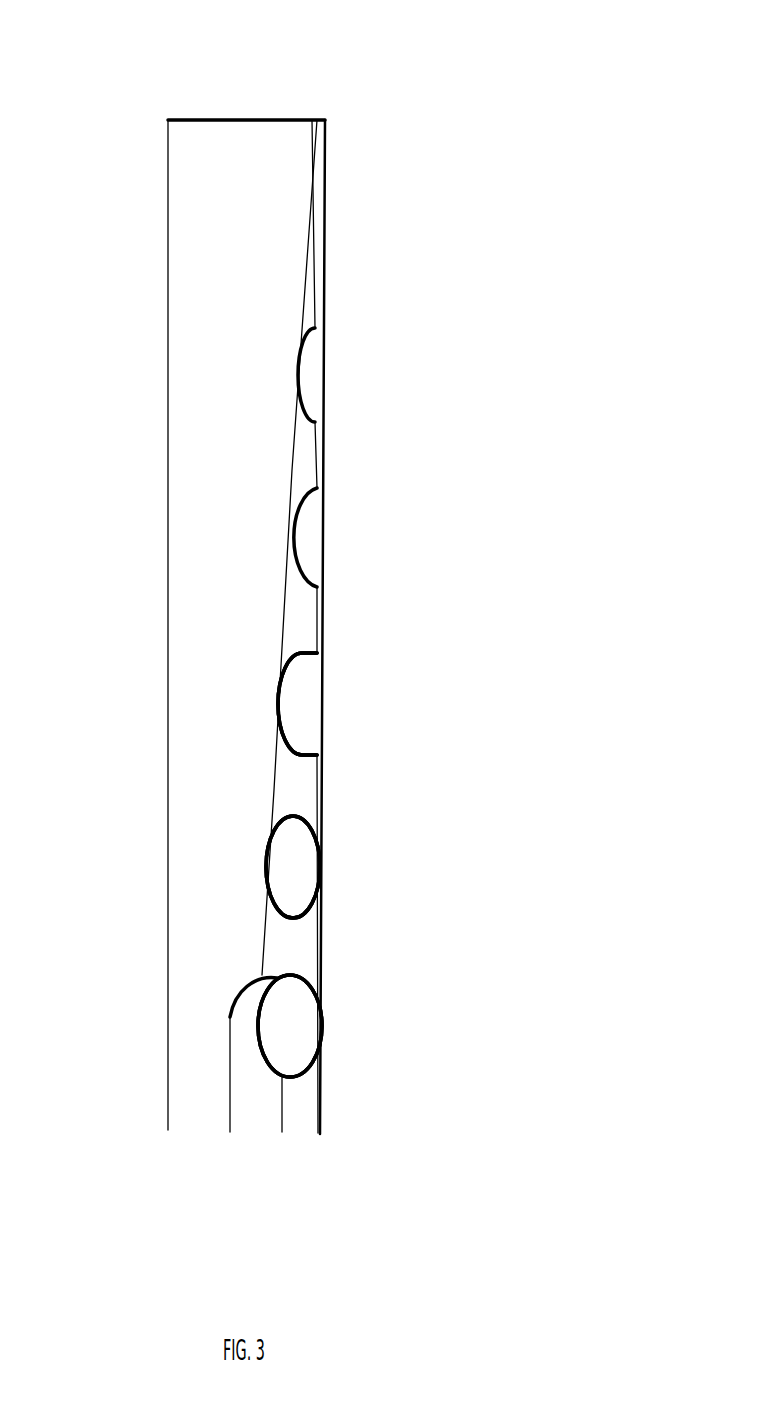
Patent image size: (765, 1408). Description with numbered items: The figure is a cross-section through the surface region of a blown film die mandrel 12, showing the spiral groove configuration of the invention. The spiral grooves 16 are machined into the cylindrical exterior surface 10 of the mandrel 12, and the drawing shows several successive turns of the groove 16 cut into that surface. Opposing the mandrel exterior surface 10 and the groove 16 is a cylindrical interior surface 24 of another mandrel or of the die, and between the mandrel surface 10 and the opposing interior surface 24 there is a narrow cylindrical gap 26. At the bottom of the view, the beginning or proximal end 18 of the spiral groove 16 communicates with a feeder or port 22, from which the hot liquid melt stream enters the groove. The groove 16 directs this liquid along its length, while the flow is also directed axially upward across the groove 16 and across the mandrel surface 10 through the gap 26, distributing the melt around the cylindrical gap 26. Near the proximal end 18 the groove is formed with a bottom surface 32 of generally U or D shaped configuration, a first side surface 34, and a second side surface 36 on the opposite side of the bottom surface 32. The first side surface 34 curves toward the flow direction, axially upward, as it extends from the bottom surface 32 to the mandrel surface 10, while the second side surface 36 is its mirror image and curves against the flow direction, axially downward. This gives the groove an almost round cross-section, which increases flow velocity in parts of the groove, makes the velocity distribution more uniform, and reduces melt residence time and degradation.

The cylindrical exterior surface 10 is at (314, 150).
The blown film die mandrel 12 is at (197, 119).
The spiral groove 16 is at (349, 683).
The proximal end 18 is at (336, 1045).
The port 22 is at (251, 1037).
The cylindrical interior surface 24 is at (326, 383).
The cylindrical gap 26 is at (322, 208).
The bottom surface 32 is at (279, 707).
The first side surface 34 is at (300, 748).
The second side surface 36 is at (304, 654).